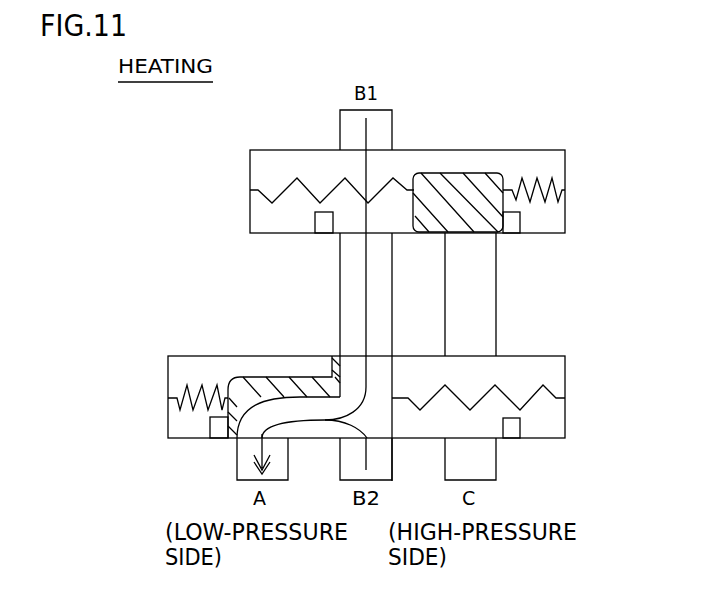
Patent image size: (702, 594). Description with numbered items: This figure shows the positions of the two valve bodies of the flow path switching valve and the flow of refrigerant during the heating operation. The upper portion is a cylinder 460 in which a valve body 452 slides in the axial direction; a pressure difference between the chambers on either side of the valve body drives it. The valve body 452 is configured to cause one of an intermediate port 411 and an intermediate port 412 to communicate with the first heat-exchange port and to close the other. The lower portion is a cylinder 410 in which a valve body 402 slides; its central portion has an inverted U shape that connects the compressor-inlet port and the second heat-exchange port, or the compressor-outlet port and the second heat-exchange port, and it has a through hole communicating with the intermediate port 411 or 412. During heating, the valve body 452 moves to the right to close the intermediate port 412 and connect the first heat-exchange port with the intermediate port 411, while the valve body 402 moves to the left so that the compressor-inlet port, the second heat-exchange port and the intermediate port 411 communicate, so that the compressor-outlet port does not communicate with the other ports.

The cylinder 460 is at (221, 182).
The valve body 452 is at (459, 187).
The intermediate port 411 is at (340, 275).
The intermediate port 412 is at (496, 276).
The cylinder 410 is at (136, 388).
The valve body 402 is at (260, 388).